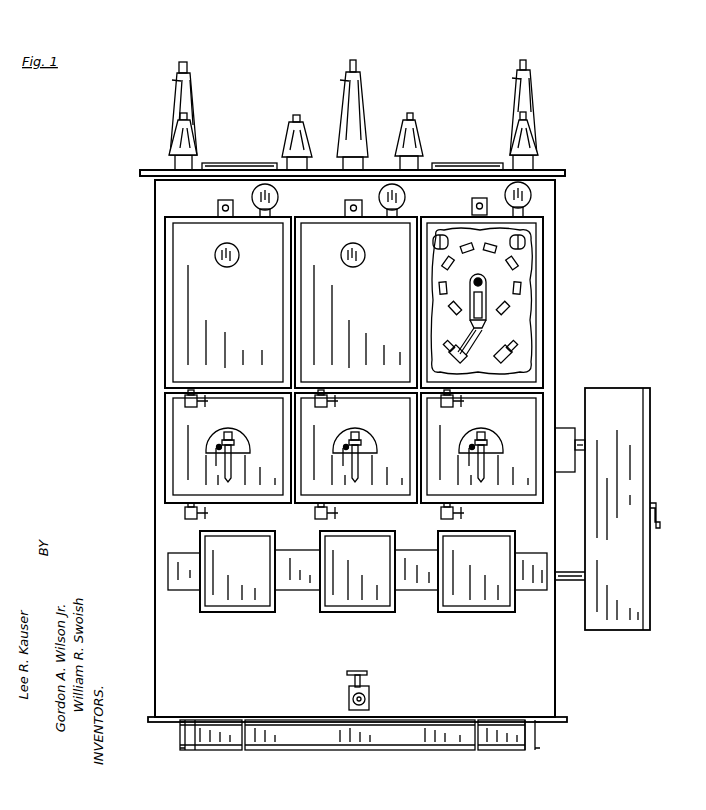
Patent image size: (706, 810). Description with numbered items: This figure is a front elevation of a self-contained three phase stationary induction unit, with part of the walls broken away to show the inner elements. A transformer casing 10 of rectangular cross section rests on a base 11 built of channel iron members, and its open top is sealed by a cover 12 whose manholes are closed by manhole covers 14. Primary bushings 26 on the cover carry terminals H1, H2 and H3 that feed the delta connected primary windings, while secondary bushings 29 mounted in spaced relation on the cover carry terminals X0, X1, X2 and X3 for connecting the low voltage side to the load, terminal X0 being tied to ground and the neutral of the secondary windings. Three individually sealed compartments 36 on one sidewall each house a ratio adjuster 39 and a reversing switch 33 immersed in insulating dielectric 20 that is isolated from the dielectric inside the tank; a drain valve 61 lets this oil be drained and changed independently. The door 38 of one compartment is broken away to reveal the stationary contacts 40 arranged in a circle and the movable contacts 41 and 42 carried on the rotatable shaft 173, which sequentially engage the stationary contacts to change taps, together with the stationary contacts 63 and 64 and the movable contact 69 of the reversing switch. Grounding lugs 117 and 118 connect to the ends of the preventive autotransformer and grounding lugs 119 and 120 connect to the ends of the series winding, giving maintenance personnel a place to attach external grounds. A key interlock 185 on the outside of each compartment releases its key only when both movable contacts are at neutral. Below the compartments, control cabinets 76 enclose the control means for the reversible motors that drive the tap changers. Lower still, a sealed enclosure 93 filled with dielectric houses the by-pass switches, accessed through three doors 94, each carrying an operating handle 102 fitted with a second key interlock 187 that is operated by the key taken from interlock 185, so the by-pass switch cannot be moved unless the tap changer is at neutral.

The transformer casing 10 is at (353, 446).
The base 11 is at (528, 736).
The cover 12 is at (567, 172).
The manhole covers 14 is at (235, 163).
The insulating dielectric 20 is at (452, 232).
The primary bushings 26 is at (173, 105).
The secondary bushings 29 is at (172, 148).
The reversing switch 33 is at (510, 337).
The sealed compartments 36 is at (595, 270).
The door 38 is at (233, 373).
The ratio adjuster 39 is at (502, 285).
The stationary contacts 40 is at (444, 265).
The movable contact 41 is at (448, 300).
The movable contact 42 is at (522, 304).
The drain valve 61 is at (194, 409).
The stationary contact 63 is at (446, 359).
The stationary contact 64 is at (514, 359).
The movable contact 69 is at (465, 340).
The control cabinets 76 is at (357, 571).
The sealed enclosure 93 is at (155, 437).
The doors 94 is at (180, 470).
The operating handle 102 is at (231, 480).
The grounding lug 117 is at (433, 242).
The grounding lug 118 is at (526, 242).
The grounding lug 119 is at (448, 350).
The grounding lug 120 is at (514, 354).
The rotatable shaft 173 is at (479, 276).
The key interlock 185 is at (218, 204).
The key interlock 187 is at (243, 440).
The primary terminal H1 is at (187, 66).
The primary terminal H2 is at (357, 64).
The primary terminal H3 is at (527, 62).
The secondary terminal X0 is at (190, 123).
The secondary terminal X1 is at (298, 116).
The secondary terminal X2 is at (414, 116).
The secondary terminal X3 is at (530, 120).